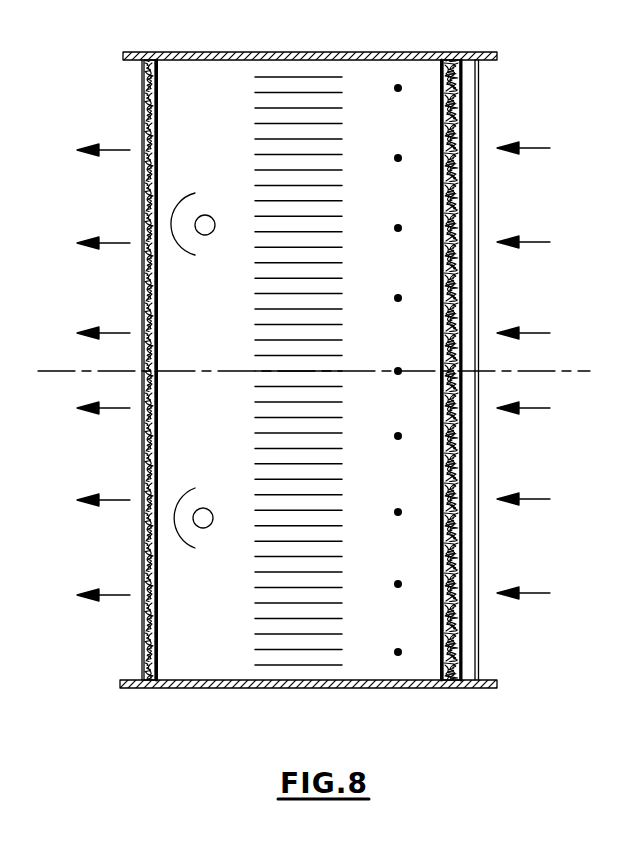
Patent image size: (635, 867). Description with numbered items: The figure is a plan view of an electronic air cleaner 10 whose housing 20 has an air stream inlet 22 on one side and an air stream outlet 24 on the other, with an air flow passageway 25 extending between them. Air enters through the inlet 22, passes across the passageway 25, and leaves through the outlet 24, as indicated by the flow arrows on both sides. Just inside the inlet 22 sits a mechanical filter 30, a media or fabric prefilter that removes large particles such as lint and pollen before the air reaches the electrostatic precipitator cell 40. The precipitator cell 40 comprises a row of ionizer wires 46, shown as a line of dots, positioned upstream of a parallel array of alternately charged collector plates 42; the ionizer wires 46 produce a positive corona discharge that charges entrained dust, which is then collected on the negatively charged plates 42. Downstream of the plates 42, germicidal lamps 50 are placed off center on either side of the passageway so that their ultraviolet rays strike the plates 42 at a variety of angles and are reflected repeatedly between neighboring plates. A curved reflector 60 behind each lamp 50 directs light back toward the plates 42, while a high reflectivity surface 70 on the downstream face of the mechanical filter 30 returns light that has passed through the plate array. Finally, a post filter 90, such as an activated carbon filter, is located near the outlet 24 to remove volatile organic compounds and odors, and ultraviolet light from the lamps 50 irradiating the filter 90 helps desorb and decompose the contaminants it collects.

The electronic air cleaner 10 is at (537, 84).
The housing 20 is at (166, 52).
The air stream inlet 22 is at (480, 203).
The air stream outlet 24 is at (143, 205).
The air flow passageway 25 is at (408, 480).
The mechanical filter 30 is at (465, 122).
The electrostatic precipitator cell 40 is at (373, 80).
The collector plates 42 is at (322, 138).
The ionizer wires 46 is at (398, 298).
The germicidal lamp 50 is at (212, 216).
The reflector 60 is at (186, 256).
The high reflectivity surface 70 is at (445, 412).
The post filter 90 is at (143, 553).